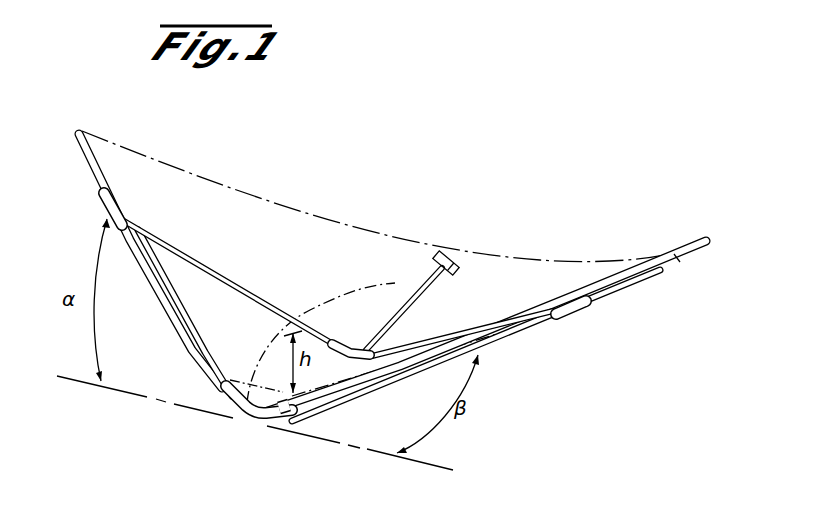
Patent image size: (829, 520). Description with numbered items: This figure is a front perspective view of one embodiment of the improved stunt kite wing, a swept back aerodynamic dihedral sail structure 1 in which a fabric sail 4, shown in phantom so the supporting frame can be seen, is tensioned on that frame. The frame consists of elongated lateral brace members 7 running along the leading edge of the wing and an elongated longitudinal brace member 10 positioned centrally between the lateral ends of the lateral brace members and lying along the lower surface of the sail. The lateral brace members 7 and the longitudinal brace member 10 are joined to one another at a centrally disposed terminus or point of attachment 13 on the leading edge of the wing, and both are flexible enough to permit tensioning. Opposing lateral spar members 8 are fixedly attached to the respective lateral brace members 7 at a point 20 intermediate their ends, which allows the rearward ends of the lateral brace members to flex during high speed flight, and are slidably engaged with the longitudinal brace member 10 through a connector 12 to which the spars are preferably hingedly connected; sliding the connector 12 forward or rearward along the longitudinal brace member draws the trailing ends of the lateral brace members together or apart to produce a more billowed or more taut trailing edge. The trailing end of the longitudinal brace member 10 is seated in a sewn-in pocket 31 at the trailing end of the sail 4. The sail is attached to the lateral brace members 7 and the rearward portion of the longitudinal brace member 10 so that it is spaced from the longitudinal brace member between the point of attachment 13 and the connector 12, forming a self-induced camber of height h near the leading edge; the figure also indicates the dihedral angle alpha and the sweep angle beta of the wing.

The dihedral sail structure 1 is at (549, 338).
The fabric sail 4 is at (273, 203).
The lateral brace members 7 is at (187, 332).
The lateral spar members 8 is at (222, 273).
The longitudinal brace member 10 is at (388, 316).
The connector 12 is at (344, 343).
The point of attachment 13 is at (244, 412).
The point of attachment of spar to lateral brace member 20 is at (108, 208).
The sewn-in pocket 31 is at (458, 262).